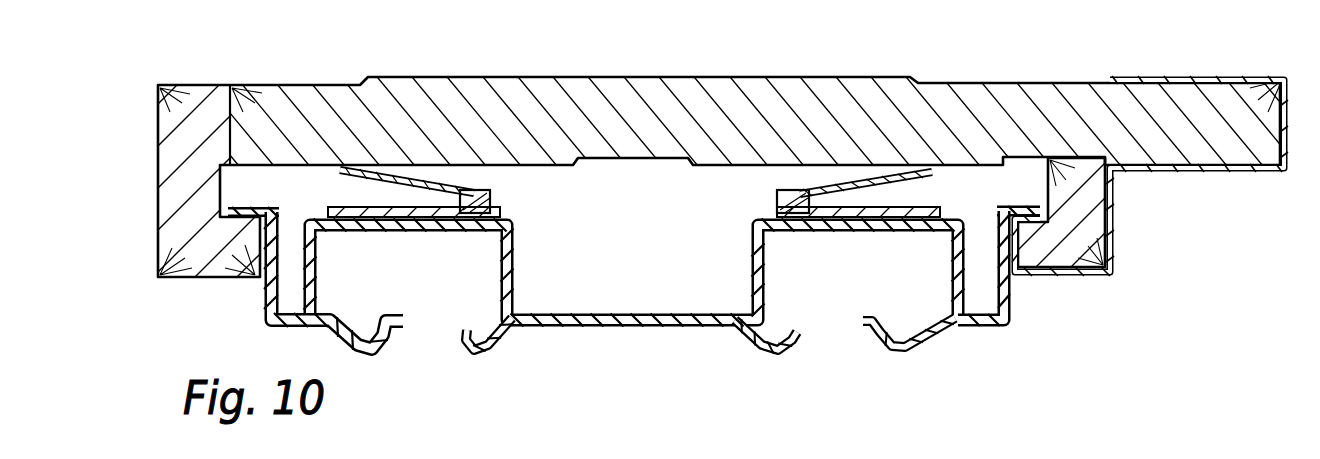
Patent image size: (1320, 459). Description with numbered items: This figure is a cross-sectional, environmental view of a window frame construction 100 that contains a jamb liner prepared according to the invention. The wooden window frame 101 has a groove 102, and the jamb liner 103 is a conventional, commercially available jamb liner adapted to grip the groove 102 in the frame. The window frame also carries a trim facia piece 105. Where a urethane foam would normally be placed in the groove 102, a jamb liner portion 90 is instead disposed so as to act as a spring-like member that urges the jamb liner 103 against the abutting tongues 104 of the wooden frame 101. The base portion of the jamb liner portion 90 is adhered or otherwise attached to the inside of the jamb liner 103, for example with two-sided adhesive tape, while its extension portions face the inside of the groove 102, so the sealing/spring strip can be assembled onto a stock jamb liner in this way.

The jamb liner portion 90 is at (483, 190).
The window frame construction 100 is at (955, 338).
The wooden window frame 101 is at (675, 76).
The groove 102 is at (243, 178).
The jamb liner 103 is at (251, 204).
The abutting tongues 104 is at (215, 273).
The trim facia piece 105 is at (1113, 238).